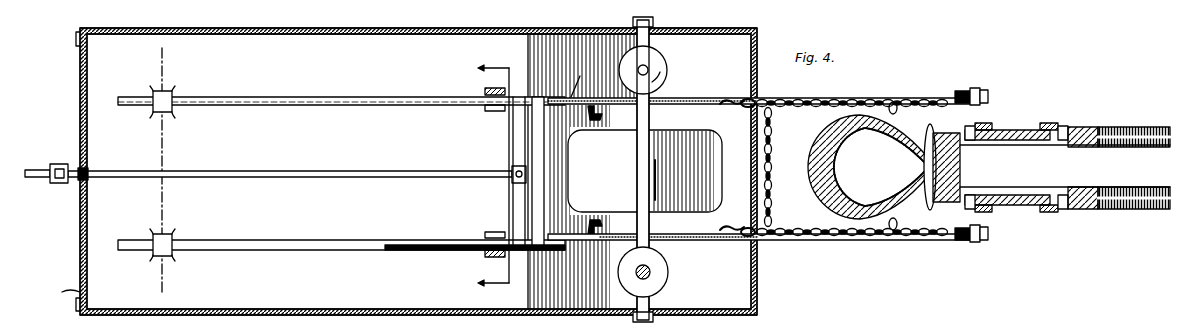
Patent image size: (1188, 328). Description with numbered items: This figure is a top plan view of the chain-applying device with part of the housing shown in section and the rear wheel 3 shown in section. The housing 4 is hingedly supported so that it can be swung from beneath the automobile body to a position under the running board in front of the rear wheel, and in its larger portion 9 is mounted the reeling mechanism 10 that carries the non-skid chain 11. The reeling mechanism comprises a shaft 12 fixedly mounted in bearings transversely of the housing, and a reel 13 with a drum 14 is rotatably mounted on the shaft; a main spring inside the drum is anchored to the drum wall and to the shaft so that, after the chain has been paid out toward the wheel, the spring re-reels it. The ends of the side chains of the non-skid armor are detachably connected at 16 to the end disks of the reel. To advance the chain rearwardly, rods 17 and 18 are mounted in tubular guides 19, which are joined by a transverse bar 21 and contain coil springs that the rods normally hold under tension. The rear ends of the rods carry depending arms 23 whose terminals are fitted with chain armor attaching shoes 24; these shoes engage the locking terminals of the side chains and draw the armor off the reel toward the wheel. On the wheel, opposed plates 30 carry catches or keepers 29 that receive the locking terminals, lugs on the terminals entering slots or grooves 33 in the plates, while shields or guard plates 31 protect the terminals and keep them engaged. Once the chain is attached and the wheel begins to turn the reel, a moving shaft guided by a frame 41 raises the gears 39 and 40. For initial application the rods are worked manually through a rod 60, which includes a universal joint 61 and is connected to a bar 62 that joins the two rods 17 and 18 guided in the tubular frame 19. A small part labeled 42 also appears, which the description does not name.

The rear wheel 3 is at (1135, 182).
The housing 4 is at (61, 289).
The larger portion of housing 9 is at (757, 272).
The reeling mechanism 10 is at (698, 98).
The non-skid chain 11 is at (775, 136).
The shaft 12 is at (677, 88).
The reel 13 is at (369, 169).
The drum 14 is at (712, 150).
The detachable connection 16 is at (592, 106).
The rod 17 is at (850, 240).
The rod 18 is at (792, 98).
The tubular guides 19 is at (340, 97).
The transverse bar 21 is at (540, 138).
The depending arms 23 is at (962, 90).
The chain armor attaching shoes 24 is at (983, 90).
The catches or keepers 29 is at (995, 125).
The opposed plates 30 is at (1022, 130).
The shields or guard plates 31 is at (983, 123).
The slots or grooves 33 is at (982, 140).
The gear 39 is at (662, 60).
The gear 40 is at (686, 63).
The frame 41 is at (650, 71).
The hook link 42 is at (728, 100).
The rod 60 is at (270, 171).
The universal joint 61 is at (58, 183).
The bar 62 is at (513, 202).